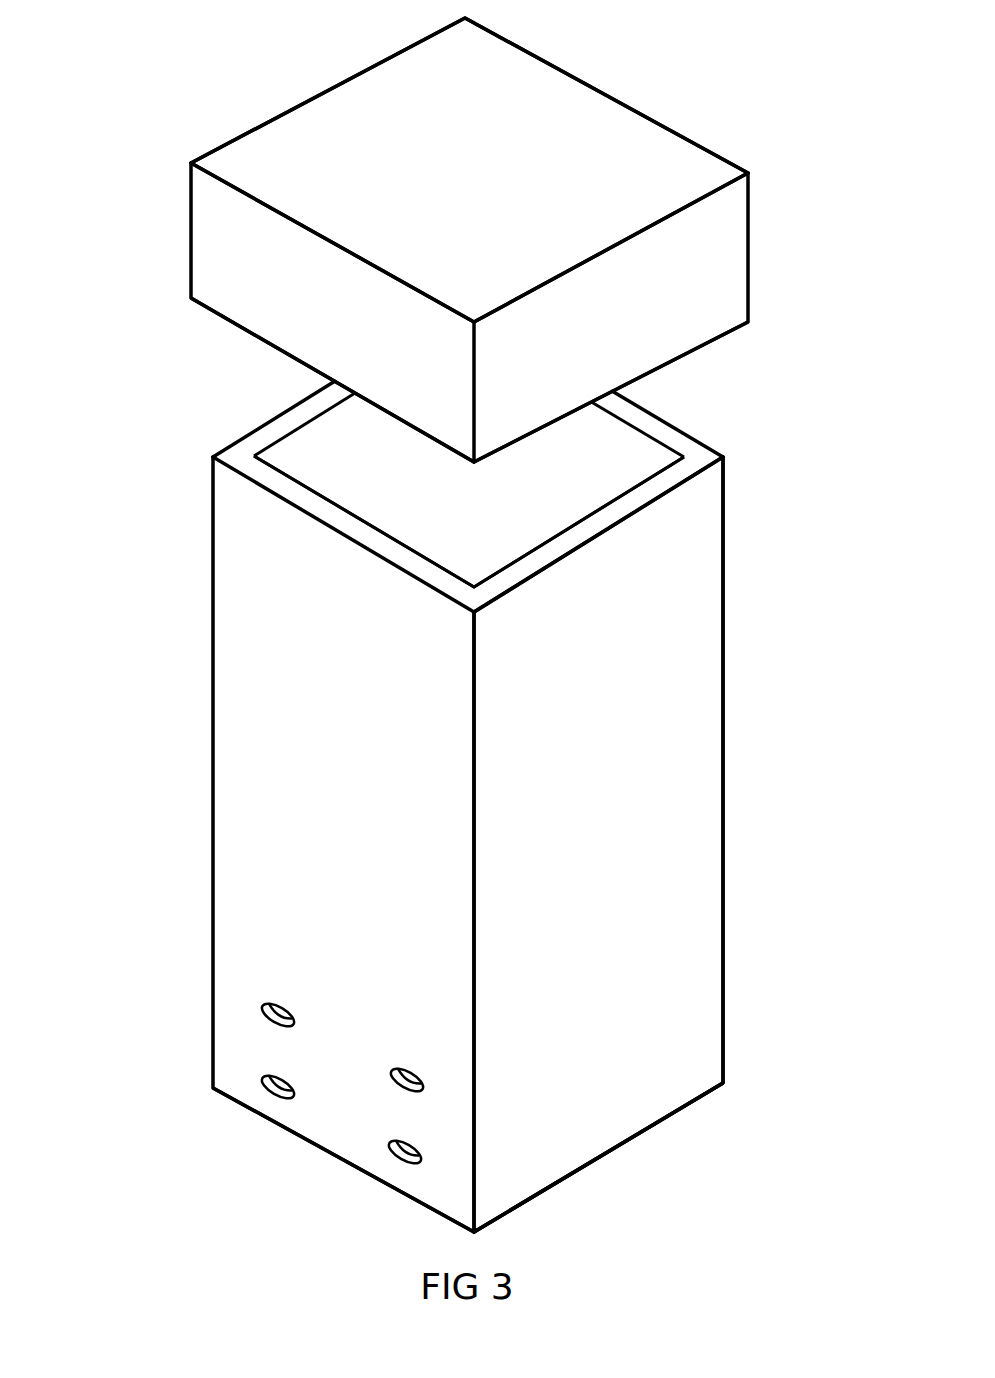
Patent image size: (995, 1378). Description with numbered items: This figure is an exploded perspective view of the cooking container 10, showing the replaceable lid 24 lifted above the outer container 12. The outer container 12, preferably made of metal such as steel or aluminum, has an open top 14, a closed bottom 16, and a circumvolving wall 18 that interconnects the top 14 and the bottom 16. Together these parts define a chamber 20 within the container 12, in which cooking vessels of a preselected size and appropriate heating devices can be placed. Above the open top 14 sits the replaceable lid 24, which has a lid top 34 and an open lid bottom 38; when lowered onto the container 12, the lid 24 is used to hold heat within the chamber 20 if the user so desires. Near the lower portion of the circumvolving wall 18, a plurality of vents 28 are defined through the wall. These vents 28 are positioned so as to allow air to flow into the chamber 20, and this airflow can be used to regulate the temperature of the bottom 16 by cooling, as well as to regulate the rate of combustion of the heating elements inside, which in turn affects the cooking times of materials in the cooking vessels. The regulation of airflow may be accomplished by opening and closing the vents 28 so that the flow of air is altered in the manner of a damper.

The container 10 is at (116, 705).
The outer container 12 is at (183, 822).
The open top 14 is at (248, 458).
The closed bottom 16 is at (667, 1122).
The circumvolving wall 18 is at (662, 753).
The chamber 20 is at (318, 457).
The replaceable lid 24 is at (708, 253).
The vents 28 is at (263, 1005).
The lid top 34 is at (547, 127).
The open lid bottom 38 is at (688, 350).